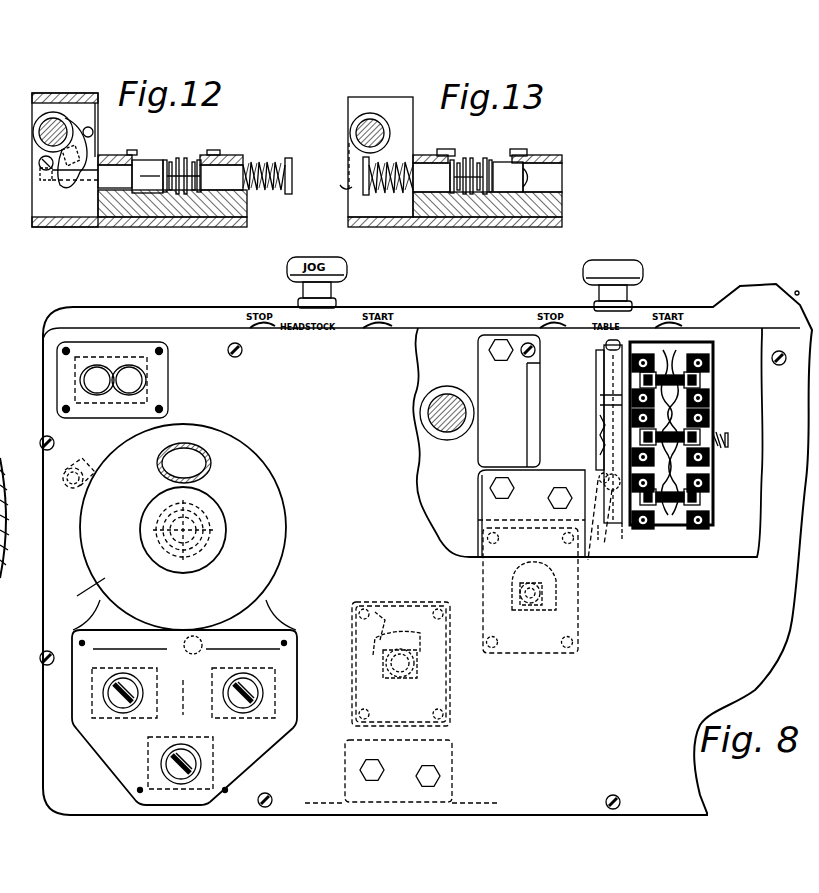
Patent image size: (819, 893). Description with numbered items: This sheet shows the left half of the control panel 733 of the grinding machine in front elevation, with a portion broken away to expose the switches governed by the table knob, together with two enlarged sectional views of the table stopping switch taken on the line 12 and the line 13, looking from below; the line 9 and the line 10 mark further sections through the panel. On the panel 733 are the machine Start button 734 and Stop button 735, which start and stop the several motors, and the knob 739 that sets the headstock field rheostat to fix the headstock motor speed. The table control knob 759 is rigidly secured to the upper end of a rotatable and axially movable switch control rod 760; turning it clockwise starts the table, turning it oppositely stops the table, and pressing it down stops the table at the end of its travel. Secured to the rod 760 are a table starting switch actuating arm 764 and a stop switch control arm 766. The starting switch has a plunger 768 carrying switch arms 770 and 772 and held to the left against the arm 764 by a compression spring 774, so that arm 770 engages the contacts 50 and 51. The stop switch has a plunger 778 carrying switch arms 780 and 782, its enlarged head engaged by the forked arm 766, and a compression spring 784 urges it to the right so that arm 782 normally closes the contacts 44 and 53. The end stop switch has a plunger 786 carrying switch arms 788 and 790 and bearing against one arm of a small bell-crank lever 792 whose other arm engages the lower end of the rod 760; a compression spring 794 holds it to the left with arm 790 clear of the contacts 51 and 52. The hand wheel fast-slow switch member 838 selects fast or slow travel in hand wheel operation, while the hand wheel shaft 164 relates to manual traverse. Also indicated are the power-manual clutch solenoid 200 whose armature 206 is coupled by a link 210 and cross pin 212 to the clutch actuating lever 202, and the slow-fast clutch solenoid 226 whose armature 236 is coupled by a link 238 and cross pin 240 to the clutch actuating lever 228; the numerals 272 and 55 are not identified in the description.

In FIG. 12, the switch control rod 760 is at (54, 112).
In FIG. 13, the switch control rod 760 is at (373, 120).
In FIG. 8, the switch control rod 760 is at (605, 348).
In FIG. 12, the stop switch control arm 766 is at (77, 197).
In FIG. 8, the stop switch control arm 766 is at (614, 450).
In FIG. 12, the switch plunger 778 is at (170, 170).
In FIG. 8, the switch plunger 778 is at (727, 441).
In FIG. 12, the switch arm 780 is at (163, 160).
In FIG. 8, the switch arm 780 is at (698, 466).
In FIG. 12, the switch arm 782 is at (186, 158).
In FIG. 8, the switch arm 782 is at (706, 453).
In FIG. 12, the contact 44 is at (203, 155).
In FIG. 12, the compression spring 784 is at (258, 158).
In FIG. 8, the compression spring 784 is at (711, 430).
In FIG. 13, the table starting switch actuating arm 764 is at (352, 186).
In FIG. 8, the table starting switch actuating arm 764 is at (600, 380).
In FIG. 13, the compression spring 774 is at (385, 187).
In FIG. 8, the compression spring 774 is at (612, 410).
In FIG. 13, the plunger 768 is at (487, 173).
In FIG. 8, the plunger 768 is at (612, 402).
In FIG. 13, the contact 50 is at (447, 144).
In FIG. 8, the contact 50 is at (631, 362).
In FIG. 13, the contact 53 is at (524, 144).
In FIG. 8, the contact 53 is at (707, 357).
In FIG. 13, the switch arm 770 is at (473, 160).
In FIG. 8, the switch arm 770 is at (653, 345).
In FIG. 13, the switch arm 772 is at (486, 158).
In FIG. 8, the switch arm 772 is at (692, 345).
In FIG. 8, the section line 9 is at (183, 443).
In FIG. 8, the section line 10 is at (613, 228).
In FIG. 8, the section line 12 is at (600, 435).
In FIG. 8, the section line 13 is at (602, 378).
In FIG. 8, the table control knob 759 is at (590, 281).
In FIG. 8, the control panel 272 is at (795, 295).
In FIG. 8, the machine Start button 734 is at (92, 398).
In FIG. 8, the Stop button 735 is at (144, 383).
In FIG. 8, the hand wheel shaft 164 is at (455, 411).
In FIG. 8, the knob 739 is at (218, 553).
In FIG. 8, the hand wheel fast-slow switch member 838 is at (250, 688).
In FIG. 8, the clutch actuating lever 228 is at (531, 513).
In FIG. 8, the solenoid 226 is at (576, 626).
In FIG. 8, the cross pin 240 is at (533, 599).
In FIG. 8, the armature 236 is at (507, 590).
In FIG. 8, the link 238 is at (556, 595).
In FIG. 8, the solenoid 200 is at (440, 697).
In FIG. 8, the solenoid armature 206 is at (401, 664).
In FIG. 8, the link 210 is at (416, 667).
In FIG. 8, the cross pin 212 is at (372, 655).
In FIG. 8, the clutch actuating lever 202 is at (418, 609).
In FIG. 8, the control panel 733 is at (575, 736).
In FIG. 8, the switch plunger 786 is at (636, 525).
In FIG. 8, the switch arm 788 is at (669, 525).
In FIG. 8, the switch arm 790 is at (692, 522).
In FIG. 8, the bell-crank lever 792 is at (612, 522).
In FIG. 8, the switch 55 is at (709, 379).
In FIG. 8, the contact 51 is at (709, 492).
In FIG. 8, the contact 52 is at (711, 522).
In FIG. 8, the compression spring 794 is at (711, 505).